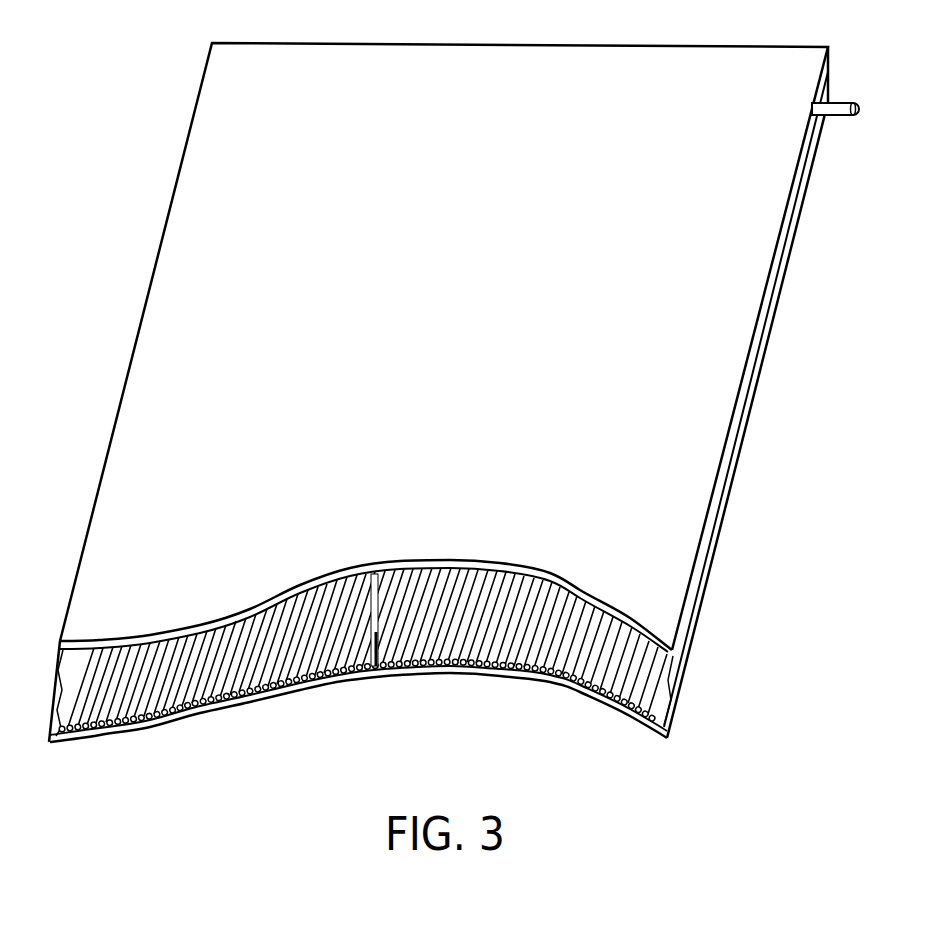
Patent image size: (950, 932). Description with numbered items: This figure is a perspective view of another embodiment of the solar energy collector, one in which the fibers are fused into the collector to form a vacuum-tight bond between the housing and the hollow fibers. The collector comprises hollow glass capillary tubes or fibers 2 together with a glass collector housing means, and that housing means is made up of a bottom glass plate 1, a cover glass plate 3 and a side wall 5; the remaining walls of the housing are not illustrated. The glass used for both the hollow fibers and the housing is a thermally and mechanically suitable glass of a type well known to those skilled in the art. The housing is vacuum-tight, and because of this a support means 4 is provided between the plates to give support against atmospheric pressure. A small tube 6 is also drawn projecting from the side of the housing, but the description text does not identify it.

The bottom glass plate 1 is at (463, 670).
The hollow glass capillary tubes or fibers 2 is at (293, 687).
The cover glass plate 3 is at (477, 560).
The support means 4 is at (377, 668).
The side wall 5 is at (690, 622).
The connecting pipe 6 is at (840, 118).